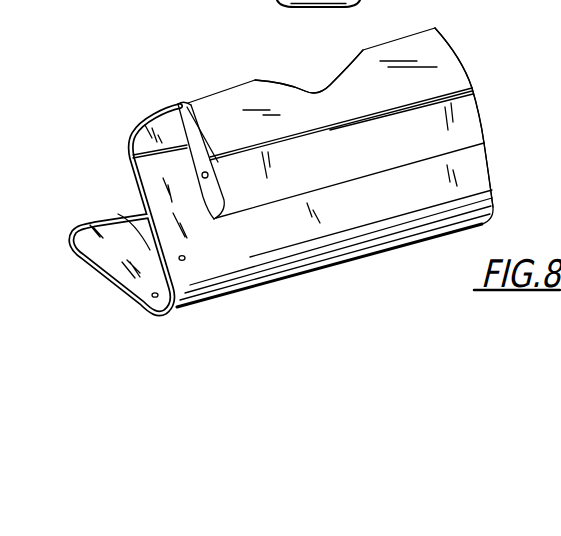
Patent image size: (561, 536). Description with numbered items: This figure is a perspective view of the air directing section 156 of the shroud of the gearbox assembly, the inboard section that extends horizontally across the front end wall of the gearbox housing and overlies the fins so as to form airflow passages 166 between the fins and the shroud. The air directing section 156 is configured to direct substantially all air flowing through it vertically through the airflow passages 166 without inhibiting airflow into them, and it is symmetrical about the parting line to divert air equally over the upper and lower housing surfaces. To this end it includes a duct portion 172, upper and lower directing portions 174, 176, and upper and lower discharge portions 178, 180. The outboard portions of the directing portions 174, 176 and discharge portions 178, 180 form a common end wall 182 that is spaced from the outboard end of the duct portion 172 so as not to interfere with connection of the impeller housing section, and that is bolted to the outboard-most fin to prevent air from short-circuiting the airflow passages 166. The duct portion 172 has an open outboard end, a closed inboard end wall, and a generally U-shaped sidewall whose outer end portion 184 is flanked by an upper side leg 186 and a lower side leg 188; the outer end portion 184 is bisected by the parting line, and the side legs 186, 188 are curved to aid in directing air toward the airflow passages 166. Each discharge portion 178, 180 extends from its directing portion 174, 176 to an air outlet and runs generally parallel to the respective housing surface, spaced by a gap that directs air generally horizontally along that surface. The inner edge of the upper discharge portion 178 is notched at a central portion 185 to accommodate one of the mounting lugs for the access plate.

The air directing section 156 is at (160, 102).
The airflow passages 166 is at (92, 298).
The duct portion 172 is at (472, 181).
The upper directing portion 174 is at (455, 123).
The lower directing portion 176 is at (50, 258).
The upper discharge portion 178 is at (437, 62).
The lower discharge portion 180 is at (138, 218).
The common end wall 182 is at (198, 162).
The outer end portion 184 is at (238, 292).
The central portion 185 is at (292, 87).
The upper side leg 186 is at (458, 175).
The lower side leg 188 is at (120, 318).